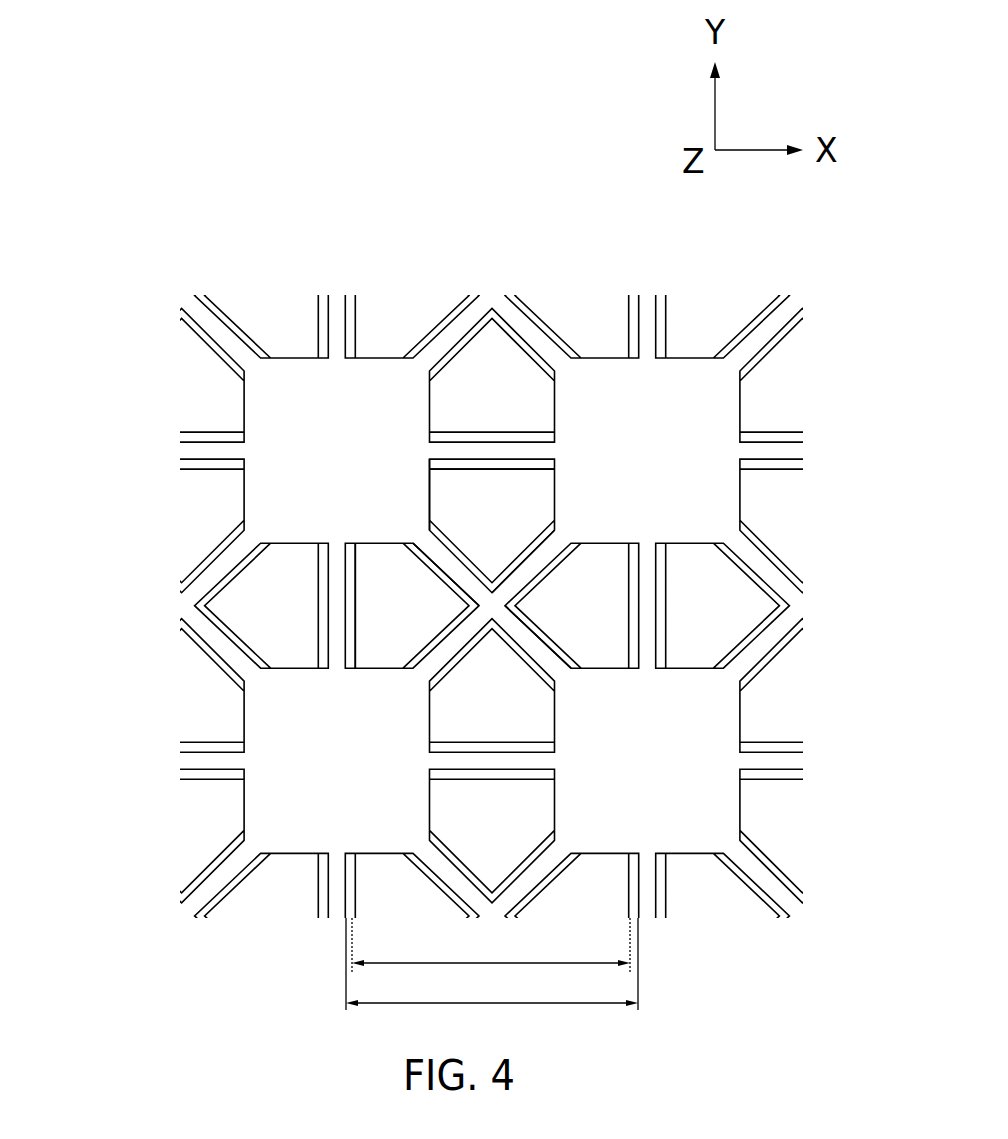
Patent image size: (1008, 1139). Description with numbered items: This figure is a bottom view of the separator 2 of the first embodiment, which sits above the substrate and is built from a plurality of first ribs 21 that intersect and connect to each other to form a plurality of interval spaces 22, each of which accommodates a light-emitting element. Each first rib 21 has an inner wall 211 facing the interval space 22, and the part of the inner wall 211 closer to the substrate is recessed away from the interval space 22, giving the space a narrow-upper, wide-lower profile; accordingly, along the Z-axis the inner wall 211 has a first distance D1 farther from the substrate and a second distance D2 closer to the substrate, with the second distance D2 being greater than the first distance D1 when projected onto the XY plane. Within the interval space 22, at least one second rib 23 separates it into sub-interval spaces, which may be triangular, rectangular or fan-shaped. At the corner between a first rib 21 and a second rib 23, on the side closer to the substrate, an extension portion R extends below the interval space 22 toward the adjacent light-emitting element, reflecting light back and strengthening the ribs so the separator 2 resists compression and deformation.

The separator 2 is at (244, 114).
The first rib 21 is at (648, 568).
The inner wall 211 is at (462, 470).
The interval space 22 is at (370, 616).
The second rib 23 is at (529, 572).
The extension portion R is at (385, 532).
The first distance D1 is at (491, 945).
The second distance D2 is at (492, 964).